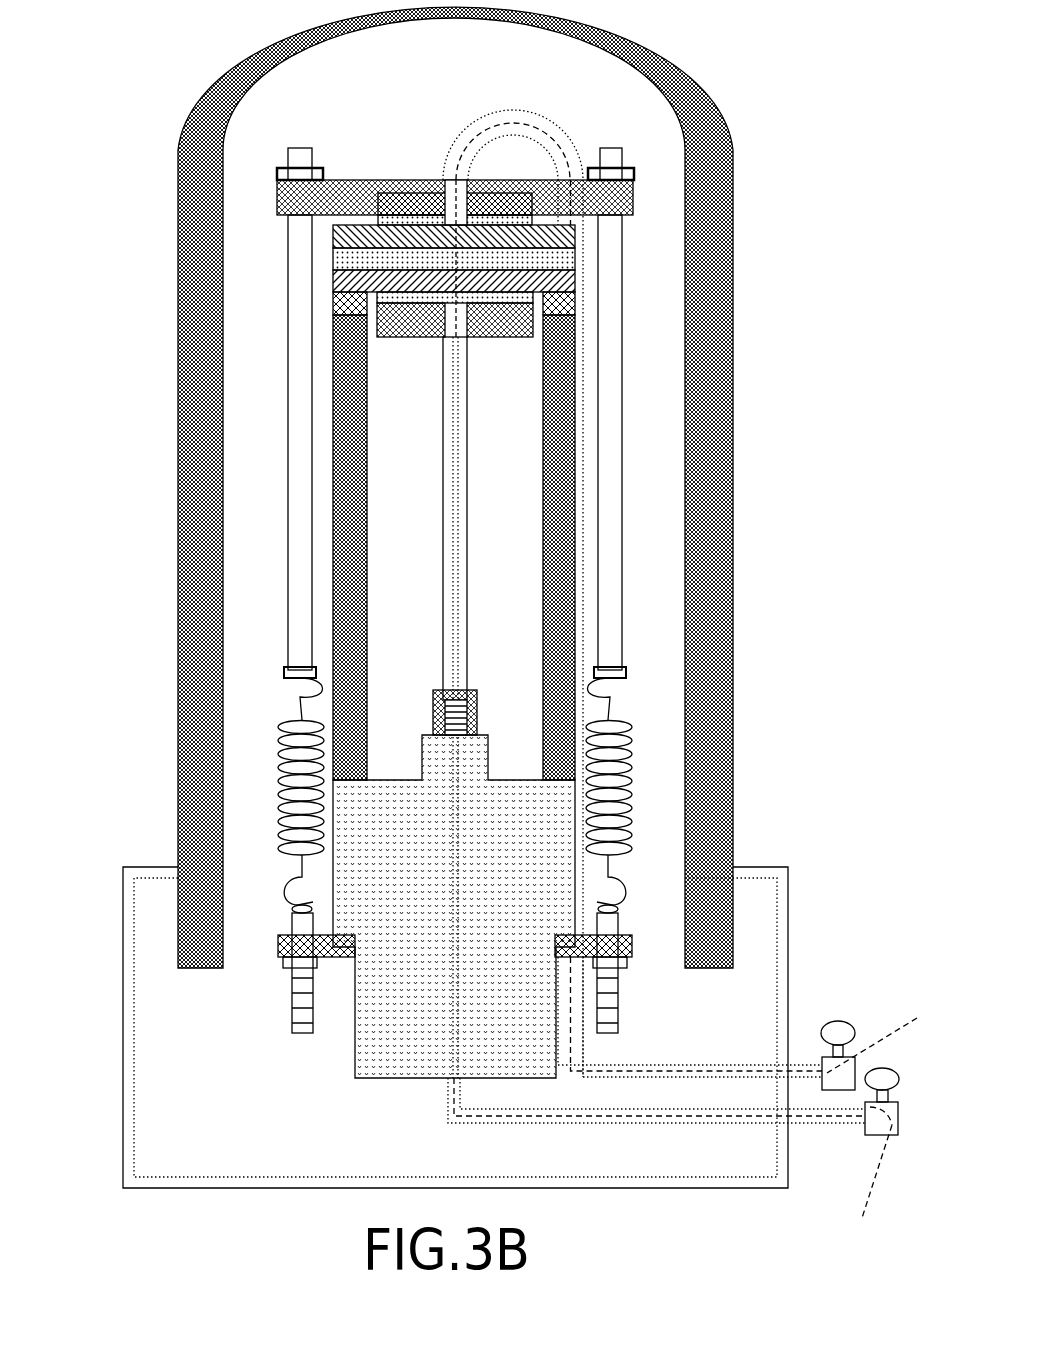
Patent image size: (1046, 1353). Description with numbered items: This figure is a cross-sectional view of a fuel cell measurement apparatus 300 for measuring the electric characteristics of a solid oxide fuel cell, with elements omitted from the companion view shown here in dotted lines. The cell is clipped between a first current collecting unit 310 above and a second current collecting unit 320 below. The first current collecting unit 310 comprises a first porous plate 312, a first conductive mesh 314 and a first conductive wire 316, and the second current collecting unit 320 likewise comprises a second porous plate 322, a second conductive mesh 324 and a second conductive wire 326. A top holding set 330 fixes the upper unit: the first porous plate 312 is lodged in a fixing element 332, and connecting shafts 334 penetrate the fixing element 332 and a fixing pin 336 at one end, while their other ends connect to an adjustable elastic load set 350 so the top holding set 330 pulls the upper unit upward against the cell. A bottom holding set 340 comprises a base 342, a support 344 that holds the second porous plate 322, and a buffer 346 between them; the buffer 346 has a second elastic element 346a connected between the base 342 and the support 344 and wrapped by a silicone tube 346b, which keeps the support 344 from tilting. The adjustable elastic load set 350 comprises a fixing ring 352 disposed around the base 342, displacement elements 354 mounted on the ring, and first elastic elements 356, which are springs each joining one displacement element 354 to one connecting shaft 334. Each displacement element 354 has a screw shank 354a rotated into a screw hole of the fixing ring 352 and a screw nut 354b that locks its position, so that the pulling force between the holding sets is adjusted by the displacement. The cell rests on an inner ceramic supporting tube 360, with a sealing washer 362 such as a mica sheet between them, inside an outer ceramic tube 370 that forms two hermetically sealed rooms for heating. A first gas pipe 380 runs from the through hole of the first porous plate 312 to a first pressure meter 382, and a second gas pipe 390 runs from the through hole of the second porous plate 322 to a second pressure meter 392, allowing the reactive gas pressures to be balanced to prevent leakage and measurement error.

The fuel cell measurement apparatus 300 is at (467, 639).
The first current collecting unit 310 is at (390, 170).
The first porous plate 312 is at (425, 197).
The first conductive mesh 314 is at (435, 218).
The first conductive wire 316 is at (486, 118).
The second current collecting unit 320 is at (388, 342).
The second porous plate 322 is at (415, 317).
The second conductive mesh 324 is at (504, 317).
The second conductive wire 326 is at (470, 408).
The top holding set 330 is at (80, 147).
The fixing element 332 is at (315, 200).
The connecting shafts 334 is at (287, 228).
The fixing pin 336 is at (277, 178).
The bottom holding set 340 is at (80, 555).
The base 342 is at (425, 813).
The support 344 is at (443, 585).
The buffer 346 is at (425, 690).
The second elastic element 346a is at (468, 713).
The silicone tube 346b is at (508, 682).
The adjustable elastic load set 350 is at (80, 745).
The fixing ring 352 is at (300, 945).
The displacement elements 354 is at (273, 975).
The screw shank 354a is at (303, 993).
The screw nut 354b is at (312, 960).
The first elastic elements 356 is at (278, 762).
The inner ceramic supporting tube 360 is at (337, 352).
The sealing washer 362 is at (337, 306).
The outer ceramic tube 370 is at (208, 392).
The first gas pipe 380 is at (690, 1065).
The first pressure meter 382 is at (834, 1021).
The second gas pipe 390 is at (690, 1079).
The second pressure meter 392 is at (876, 1128).